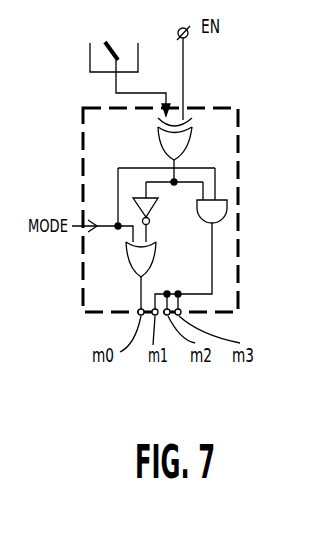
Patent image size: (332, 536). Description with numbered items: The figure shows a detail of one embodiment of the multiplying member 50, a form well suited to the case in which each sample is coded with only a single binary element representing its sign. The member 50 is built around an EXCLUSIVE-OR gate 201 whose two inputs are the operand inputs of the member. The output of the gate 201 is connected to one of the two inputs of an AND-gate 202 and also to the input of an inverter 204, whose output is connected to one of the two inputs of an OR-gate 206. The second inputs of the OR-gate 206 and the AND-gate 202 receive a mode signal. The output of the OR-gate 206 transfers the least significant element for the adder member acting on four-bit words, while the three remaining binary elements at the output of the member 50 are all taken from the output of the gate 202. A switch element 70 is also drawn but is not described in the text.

The multiplying member 50 is at (238, 165).
The switch 70 is at (90, 53).
The EXCLUSIVE-OR gate 201 is at (192, 134).
The AND-gate 202 is at (222, 207).
The inverter 204 is at (153, 207).
The OR-gate 206 is at (128, 260).